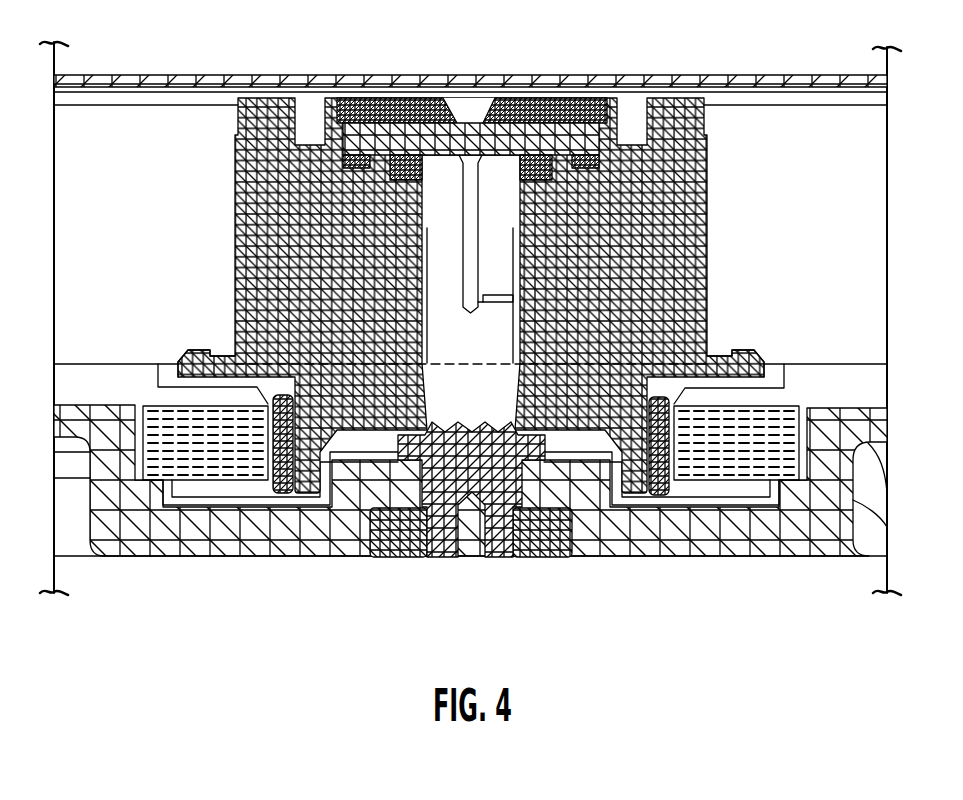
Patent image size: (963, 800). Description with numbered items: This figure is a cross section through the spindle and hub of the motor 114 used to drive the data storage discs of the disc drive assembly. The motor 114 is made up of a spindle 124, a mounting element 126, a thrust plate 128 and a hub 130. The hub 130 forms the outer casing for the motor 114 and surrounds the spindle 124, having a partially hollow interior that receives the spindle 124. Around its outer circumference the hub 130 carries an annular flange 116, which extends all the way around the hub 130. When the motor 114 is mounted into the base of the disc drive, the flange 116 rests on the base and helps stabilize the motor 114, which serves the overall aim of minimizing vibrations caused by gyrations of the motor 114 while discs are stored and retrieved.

The motor 114 is at (502, 75).
The flange 116 is at (193, 350).
The spindle 124 is at (452, 270).
The mounting element 126 is at (457, 475).
The thrust plate 128 is at (590, 147).
The hub 130 is at (708, 222).